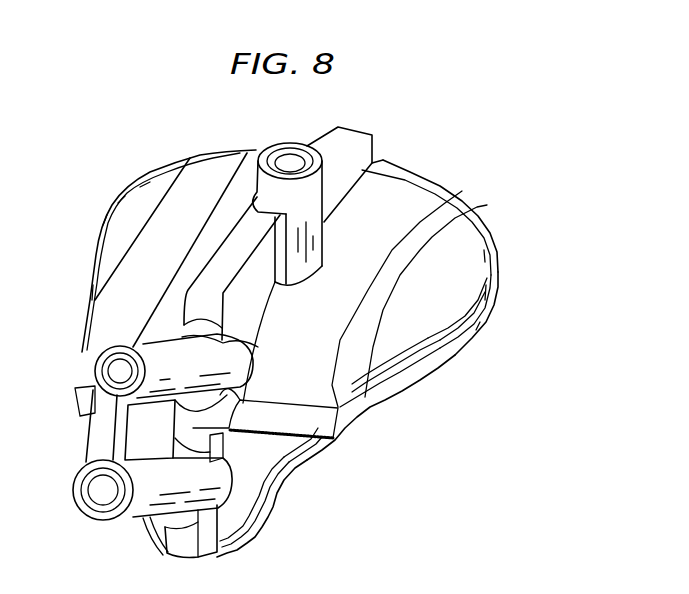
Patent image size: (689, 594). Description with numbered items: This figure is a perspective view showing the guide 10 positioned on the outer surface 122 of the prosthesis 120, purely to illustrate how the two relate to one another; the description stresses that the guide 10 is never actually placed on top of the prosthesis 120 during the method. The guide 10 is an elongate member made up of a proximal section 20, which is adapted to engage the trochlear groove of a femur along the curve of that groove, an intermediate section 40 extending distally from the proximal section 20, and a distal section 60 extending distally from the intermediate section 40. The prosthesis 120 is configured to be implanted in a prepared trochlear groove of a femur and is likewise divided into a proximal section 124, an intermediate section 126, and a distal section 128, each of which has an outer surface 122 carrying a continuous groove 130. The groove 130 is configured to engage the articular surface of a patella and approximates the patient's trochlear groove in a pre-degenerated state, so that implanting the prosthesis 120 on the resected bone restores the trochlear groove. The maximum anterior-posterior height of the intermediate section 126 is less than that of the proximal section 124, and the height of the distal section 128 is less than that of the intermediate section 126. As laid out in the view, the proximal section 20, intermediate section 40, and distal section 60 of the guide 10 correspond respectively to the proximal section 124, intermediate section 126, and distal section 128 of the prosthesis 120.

The guide 10 is at (44, 455).
The proximal section 20 is at (235, 250).
The intermediate section 40 is at (218, 430).
The distal section 60 is at (173, 543).
The prosthesis 120 is at (516, 214).
The outer surface 122 is at (413, 192).
The proximal section 124 is at (493, 322).
The intermediate section 126 is at (330, 444).
The distal section 128 is at (267, 533).
The groove 130 is at (378, 161).